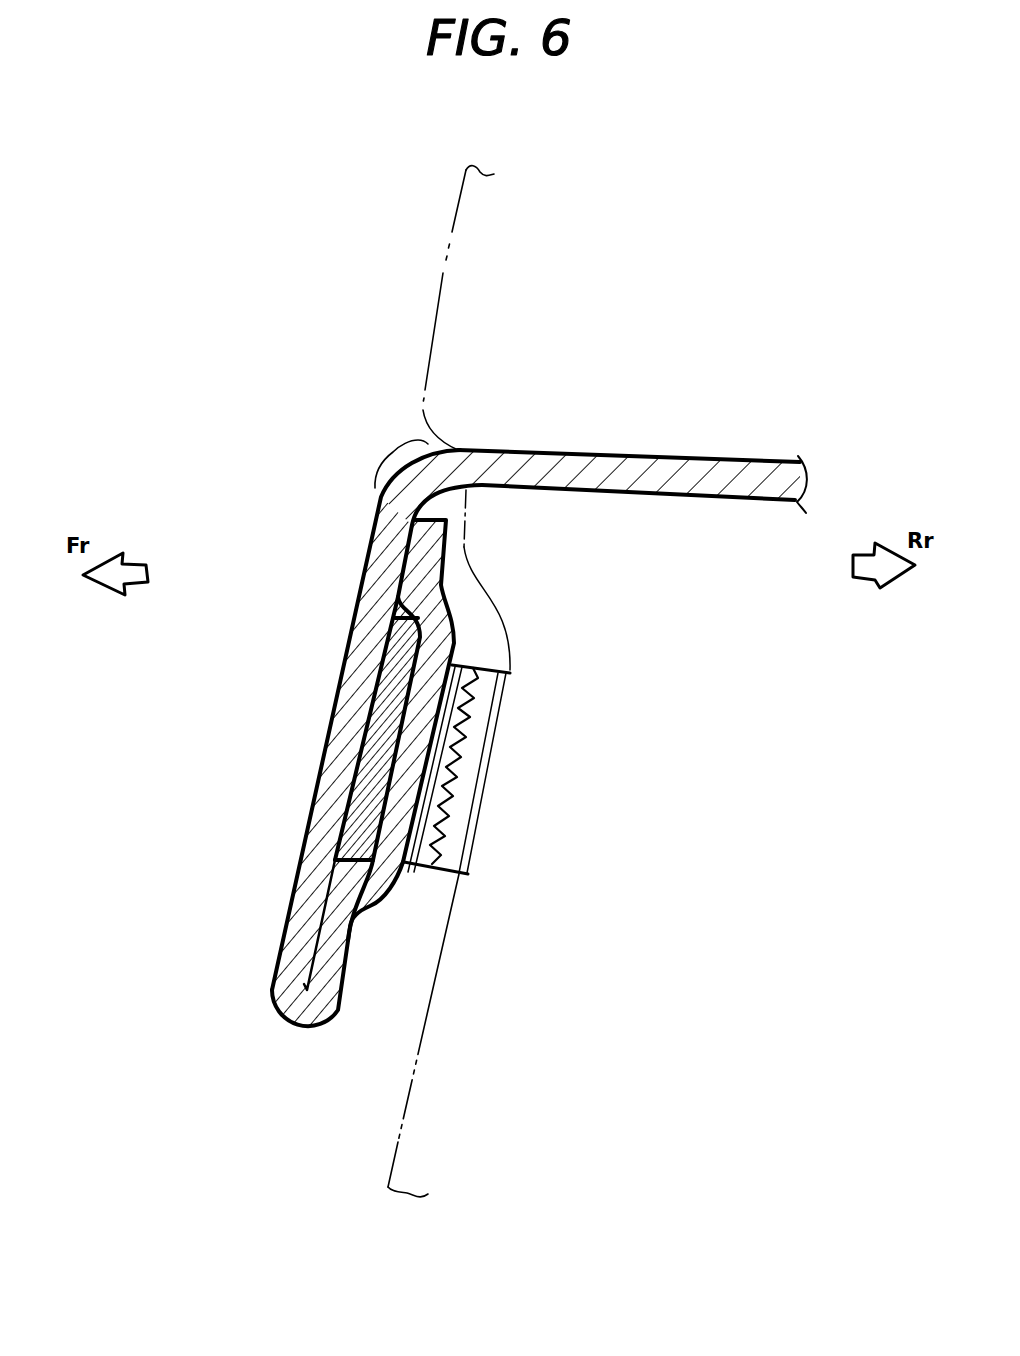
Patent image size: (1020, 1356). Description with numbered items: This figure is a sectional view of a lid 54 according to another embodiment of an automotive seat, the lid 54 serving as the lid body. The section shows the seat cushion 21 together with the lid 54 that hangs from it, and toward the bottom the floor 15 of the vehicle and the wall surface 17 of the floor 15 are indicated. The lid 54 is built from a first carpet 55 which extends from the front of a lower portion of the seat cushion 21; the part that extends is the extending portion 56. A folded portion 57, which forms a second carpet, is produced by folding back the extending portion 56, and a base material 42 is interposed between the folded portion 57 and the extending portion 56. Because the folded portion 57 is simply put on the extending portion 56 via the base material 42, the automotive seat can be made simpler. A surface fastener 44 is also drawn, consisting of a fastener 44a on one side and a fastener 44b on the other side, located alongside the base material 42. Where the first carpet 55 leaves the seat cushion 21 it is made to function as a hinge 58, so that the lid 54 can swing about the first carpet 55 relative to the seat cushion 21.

The floor 15 is at (338, 1176).
The wall surface 17 is at (402, 1128).
The seat cushion 21 is at (443, 270).
The base material 42 is at (430, 610).
The surface fastener 44 is at (455, 897).
The fastener on one side 44a is at (445, 743).
The fastener on the other side 44b is at (483, 693).
The lid 54 is at (332, 483).
The first carpet 55 is at (493, 430).
The extending portion 56 is at (284, 941).
The folded portion 57 is at (375, 907).
The hinge 58 is at (390, 447).